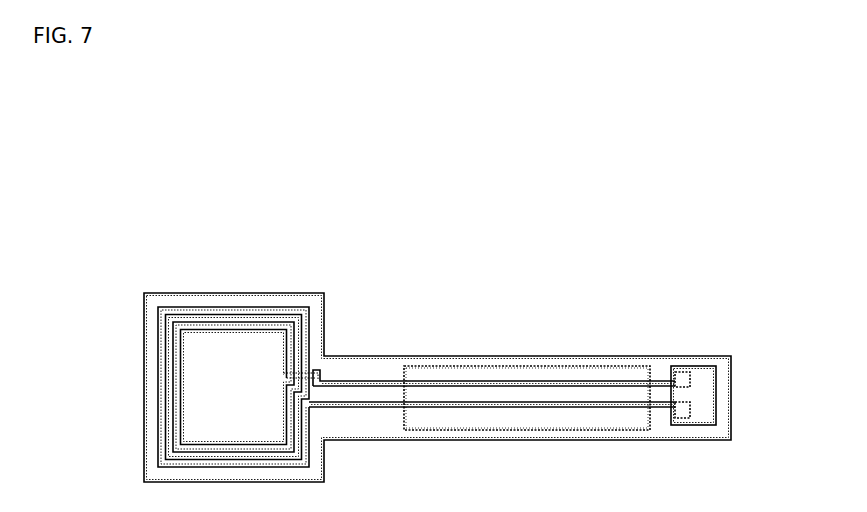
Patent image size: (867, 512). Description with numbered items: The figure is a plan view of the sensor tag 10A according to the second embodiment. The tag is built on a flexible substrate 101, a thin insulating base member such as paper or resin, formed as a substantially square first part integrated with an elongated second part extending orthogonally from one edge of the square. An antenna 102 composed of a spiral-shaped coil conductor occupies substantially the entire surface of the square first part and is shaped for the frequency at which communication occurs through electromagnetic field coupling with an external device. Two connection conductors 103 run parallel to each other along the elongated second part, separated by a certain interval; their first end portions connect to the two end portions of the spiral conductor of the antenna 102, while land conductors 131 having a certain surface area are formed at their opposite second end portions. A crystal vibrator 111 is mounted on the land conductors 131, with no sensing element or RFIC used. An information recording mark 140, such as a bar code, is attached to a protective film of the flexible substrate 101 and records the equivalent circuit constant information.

The sensor tag 10A is at (624, 264).
The flexible substrate 101 is at (588, 364).
The antenna 102 is at (268, 307).
The connection conductors 103 is at (386, 388).
The crystal vibrator 111 is at (706, 364).
The land conductors 131 is at (681, 418).
The information recording mark 140 is at (529, 430).